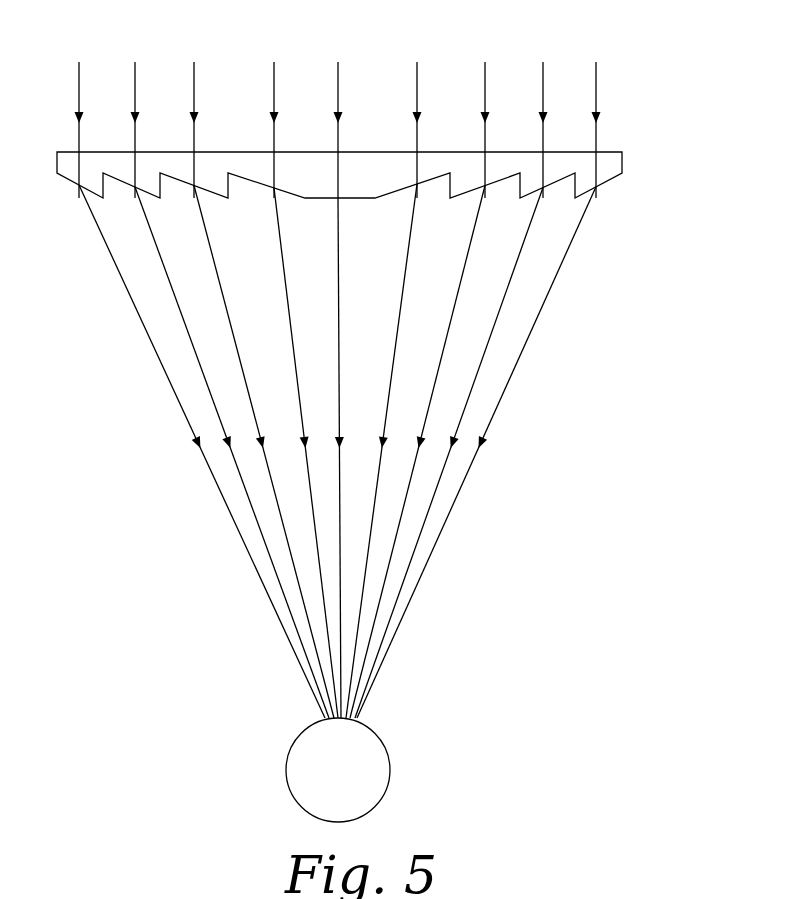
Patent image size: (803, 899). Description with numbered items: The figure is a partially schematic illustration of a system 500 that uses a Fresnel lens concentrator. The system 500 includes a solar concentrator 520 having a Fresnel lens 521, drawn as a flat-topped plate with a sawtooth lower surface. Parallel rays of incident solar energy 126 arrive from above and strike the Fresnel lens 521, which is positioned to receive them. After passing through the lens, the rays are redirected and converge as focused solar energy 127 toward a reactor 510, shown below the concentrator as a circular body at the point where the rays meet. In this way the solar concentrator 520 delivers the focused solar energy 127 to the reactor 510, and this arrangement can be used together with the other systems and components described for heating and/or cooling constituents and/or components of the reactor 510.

The incident solar energy 126 is at (598, 84).
The focused solar energy 127 is at (562, 267).
The system 500 is at (623, 447).
The reactor 510 is at (390, 768).
The solar concentrator 520 is at (423, 162).
The Fresnel lens 521 is at (622, 158).